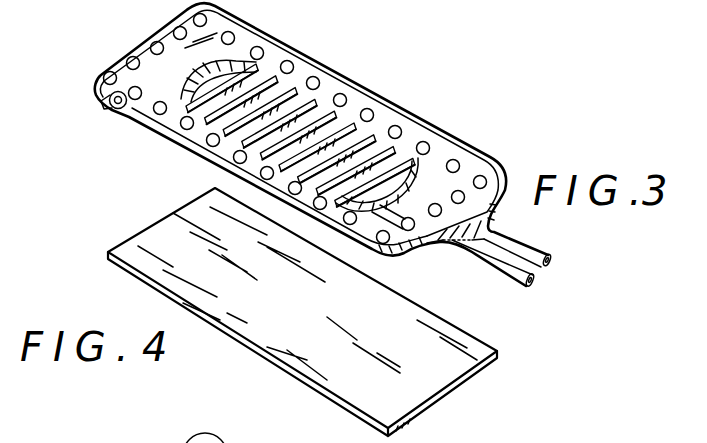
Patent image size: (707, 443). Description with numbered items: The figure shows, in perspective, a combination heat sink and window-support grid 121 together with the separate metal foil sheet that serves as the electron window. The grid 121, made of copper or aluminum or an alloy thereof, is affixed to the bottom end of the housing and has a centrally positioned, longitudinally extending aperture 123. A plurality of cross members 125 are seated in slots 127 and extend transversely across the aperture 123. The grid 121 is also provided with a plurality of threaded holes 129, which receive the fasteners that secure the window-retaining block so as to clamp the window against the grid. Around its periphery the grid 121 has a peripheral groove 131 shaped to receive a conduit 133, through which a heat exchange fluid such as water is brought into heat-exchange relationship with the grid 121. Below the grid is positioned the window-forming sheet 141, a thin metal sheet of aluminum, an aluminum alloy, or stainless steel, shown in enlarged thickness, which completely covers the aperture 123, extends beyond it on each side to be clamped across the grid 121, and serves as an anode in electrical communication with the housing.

In FIG. 3, the heat sink and window-support grid 121 is at (481, 152).
In FIG. 3, the aperture 123 is at (197, 77).
In FIG. 3, the cross members 125 is at (314, 124).
In FIG. 3, the slots 127 is at (416, 139).
In FIG. 3, the threaded holes 129 is at (395, 127).
In FIG. 3, the peripheral groove 131 is at (130, 114).
In FIG. 3, the conduit 133 is at (103, 102).
In FIG. 4, the window-forming sheet 141 is at (123, 250).